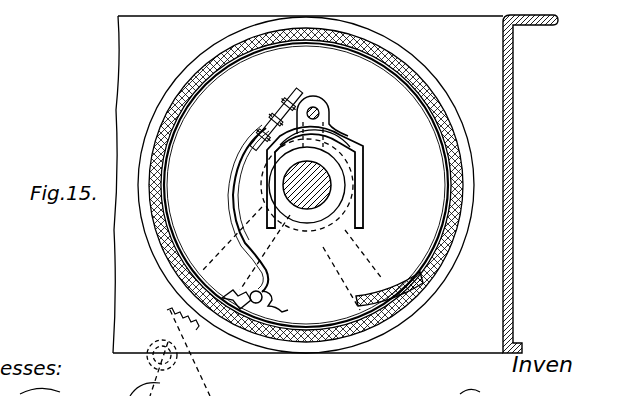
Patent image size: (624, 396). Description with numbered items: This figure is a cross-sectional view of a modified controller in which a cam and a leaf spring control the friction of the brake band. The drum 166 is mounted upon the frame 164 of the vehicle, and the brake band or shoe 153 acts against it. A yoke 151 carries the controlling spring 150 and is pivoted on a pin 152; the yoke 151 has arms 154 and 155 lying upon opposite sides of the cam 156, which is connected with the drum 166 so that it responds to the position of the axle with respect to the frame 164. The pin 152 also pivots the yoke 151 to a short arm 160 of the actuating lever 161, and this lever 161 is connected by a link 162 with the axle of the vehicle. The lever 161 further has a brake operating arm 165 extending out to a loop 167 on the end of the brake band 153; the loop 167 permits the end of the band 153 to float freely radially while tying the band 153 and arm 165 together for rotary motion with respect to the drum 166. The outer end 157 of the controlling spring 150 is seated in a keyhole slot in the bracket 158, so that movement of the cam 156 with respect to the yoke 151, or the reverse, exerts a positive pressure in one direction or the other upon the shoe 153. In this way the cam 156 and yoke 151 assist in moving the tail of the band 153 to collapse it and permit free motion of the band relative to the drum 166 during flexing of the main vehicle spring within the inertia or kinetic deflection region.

The controlling spring 150 is at (232, 201).
The yoke 151 is at (262, 134).
The pin 152 is at (326, 108).
The brake band or shoe 153 is at (182, 268).
The yoke arm 154 is at (294, 218).
The yoke arm 155 is at (358, 216).
The cam 156 is at (318, 216).
The outer end of controlling spring 157 is at (258, 291).
The bracket 158 is at (270, 304).
The short arm of actuating lever 160 is at (318, 141).
The actuating lever 161 is at (173, 307).
The link 162 is at (195, 386).
The frame 164 is at (486, 62).
The brake operating arm 165 is at (360, 257).
The drum 166 is at (459, 232).
The loop 167 is at (386, 292).